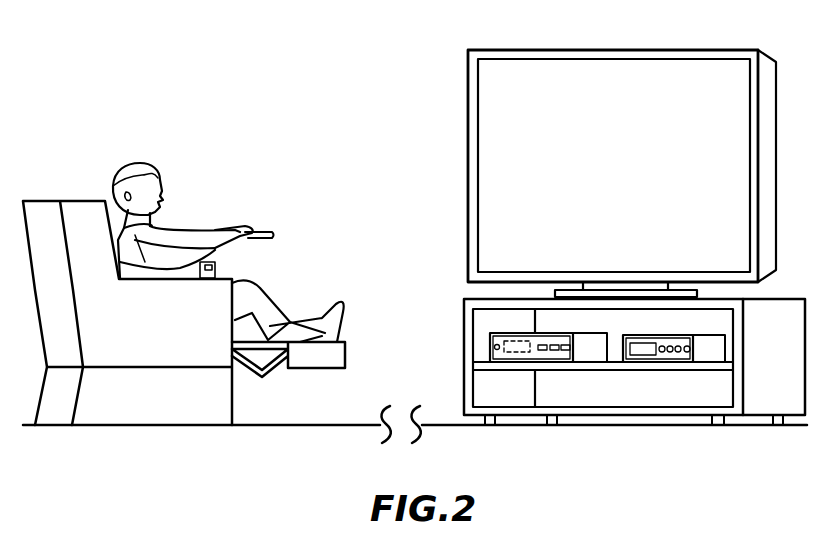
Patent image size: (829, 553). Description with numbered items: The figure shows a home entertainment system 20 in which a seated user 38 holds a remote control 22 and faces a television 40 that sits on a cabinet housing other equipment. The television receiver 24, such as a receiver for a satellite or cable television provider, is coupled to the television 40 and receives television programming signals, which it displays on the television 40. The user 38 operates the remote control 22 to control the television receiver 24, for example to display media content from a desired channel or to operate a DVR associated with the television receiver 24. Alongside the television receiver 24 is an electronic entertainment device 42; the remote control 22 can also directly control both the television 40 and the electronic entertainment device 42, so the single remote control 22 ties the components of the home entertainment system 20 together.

The home entertainment system 20 is at (217, 81).
The remote control 22 is at (270, 232).
The television receiver 24 is at (550, 333).
The user 38 is at (172, 176).
The television 40 is at (513, 50).
The electronic entertainment device 42 is at (668, 335).